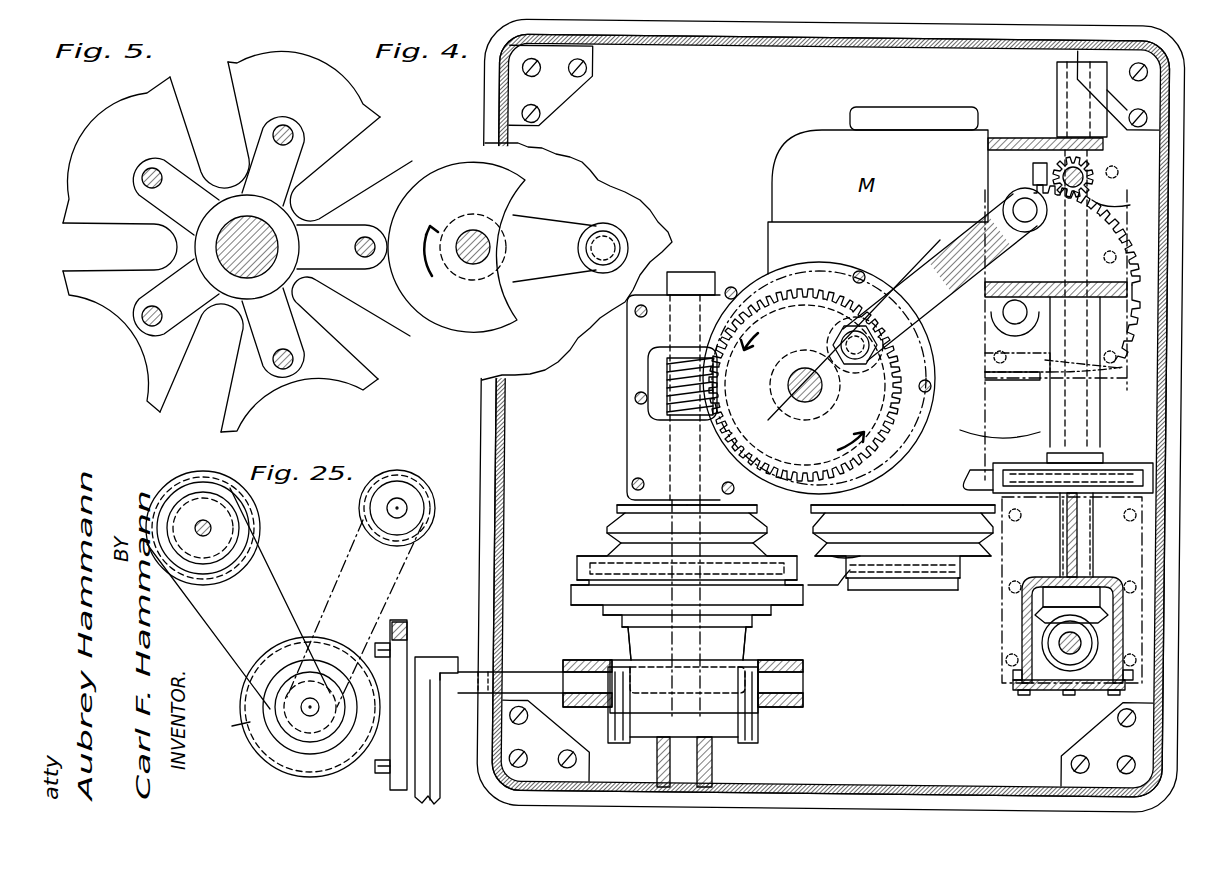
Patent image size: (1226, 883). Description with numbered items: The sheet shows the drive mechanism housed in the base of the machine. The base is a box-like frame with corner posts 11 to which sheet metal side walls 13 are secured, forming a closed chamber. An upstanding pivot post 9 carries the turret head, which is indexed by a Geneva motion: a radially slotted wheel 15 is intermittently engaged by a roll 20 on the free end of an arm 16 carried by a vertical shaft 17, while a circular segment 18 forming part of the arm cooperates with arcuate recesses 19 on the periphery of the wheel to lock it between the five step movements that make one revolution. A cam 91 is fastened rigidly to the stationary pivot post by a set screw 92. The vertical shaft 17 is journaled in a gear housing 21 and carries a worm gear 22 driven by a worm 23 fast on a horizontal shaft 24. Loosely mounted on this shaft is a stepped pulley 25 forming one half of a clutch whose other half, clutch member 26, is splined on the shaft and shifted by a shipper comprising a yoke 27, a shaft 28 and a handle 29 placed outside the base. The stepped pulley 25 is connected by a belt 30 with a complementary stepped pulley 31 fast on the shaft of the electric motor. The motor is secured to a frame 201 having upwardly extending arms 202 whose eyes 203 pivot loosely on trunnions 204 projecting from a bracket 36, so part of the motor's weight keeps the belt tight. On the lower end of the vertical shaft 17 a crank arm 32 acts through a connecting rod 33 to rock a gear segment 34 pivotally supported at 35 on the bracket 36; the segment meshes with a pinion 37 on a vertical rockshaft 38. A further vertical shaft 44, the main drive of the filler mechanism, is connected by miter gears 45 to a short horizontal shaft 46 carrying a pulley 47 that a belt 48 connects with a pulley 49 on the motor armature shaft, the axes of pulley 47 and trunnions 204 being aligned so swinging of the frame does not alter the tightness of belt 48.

In FIG. 5, the pivot post 9 is at (260, 274).
In FIG. 25, the corner posts 11 is at (594, 68).
In FIG. 25, the side walls 13 is at (820, 44).
In FIG. 5, the radially slotted wheel 15 is at (262, 392).
In FIG. 4, the arm 16 is at (554, 248).
In FIG. 25, the vertical shaft 17 is at (803, 402).
In FIG. 4, the vertical shaft 17 is at (468, 262).
In FIG. 25, the circular segment 18 is at (819, 378).
In FIG. 4, the circular segment 18 is at (482, 340).
In FIG. 5, the arcuate recesses 19 is at (302, 376).
In FIG. 4, the roll 20 is at (618, 232).
In FIG. 25, the gear housing 21 is at (627, 357).
In FIG. 25, the worm gear 22 is at (805, 385).
In FIG. 25, the worm 23 is at (715, 396).
In FIG. 25, the horizontal shaft 24 is at (212, 527).
In FIG. 25, the stepped pulley 25 is at (612, 516).
In FIG. 25, the clutch member 26 is at (740, 648).
In FIG. 25, the yoke 27 is at (758, 730).
In FIG. 25, the shaft 28 is at (520, 672).
In FIG. 25, the handle 29 is at (440, 800).
In FIG. 25, the belt 30 is at (838, 580).
In FIG. 25, the stepped pulley 31 is at (962, 565).
In FIG. 25, the crank arm 32 is at (858, 378).
In FIG. 25, the connecting rod 33 is at (907, 304).
In FIG. 25, the gear segment 34 is at (1087, 273).
In FIG. 25, the pivot 35 is at (1003, 312).
In FIG. 25, the bracket 36 is at (988, 145).
In FIG. 25, the pinion 37 is at (1130, 207).
In FIG. 25, the rockshaft 38 is at (1090, 186).
In FIG. 25, the vertical shaft 44 is at (1068, 655).
In FIG. 25, the miter gears 45 is at (1022, 620).
In FIG. 25, the horizontal shaft 46 is at (1090, 560).
In FIG. 25, the pulley 47 is at (1126, 466).
In FIG. 25, the belt 48 is at (980, 476).
In FIG. 25, the pulley 49 is at (962, 430).
In FIG. 5, the cam 91 is at (300, 212).
In FIG. 5, the set screw 92 is at (275, 250).
In FIG. 25, the frame 201 is at (392, 793).
In FIG. 25, the arms 202 is at (408, 620).
In FIG. 25, the eyes 203 is at (1060, 96).
In FIG. 25, the trunnions 204 is at (1064, 78).